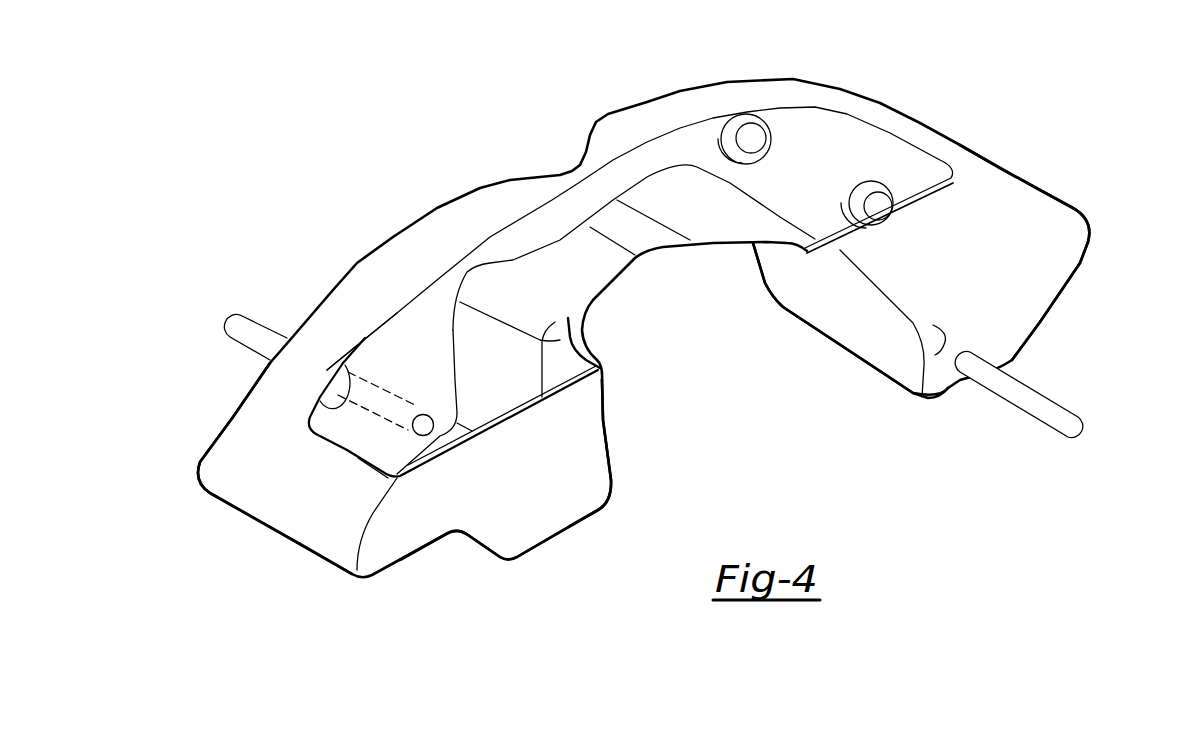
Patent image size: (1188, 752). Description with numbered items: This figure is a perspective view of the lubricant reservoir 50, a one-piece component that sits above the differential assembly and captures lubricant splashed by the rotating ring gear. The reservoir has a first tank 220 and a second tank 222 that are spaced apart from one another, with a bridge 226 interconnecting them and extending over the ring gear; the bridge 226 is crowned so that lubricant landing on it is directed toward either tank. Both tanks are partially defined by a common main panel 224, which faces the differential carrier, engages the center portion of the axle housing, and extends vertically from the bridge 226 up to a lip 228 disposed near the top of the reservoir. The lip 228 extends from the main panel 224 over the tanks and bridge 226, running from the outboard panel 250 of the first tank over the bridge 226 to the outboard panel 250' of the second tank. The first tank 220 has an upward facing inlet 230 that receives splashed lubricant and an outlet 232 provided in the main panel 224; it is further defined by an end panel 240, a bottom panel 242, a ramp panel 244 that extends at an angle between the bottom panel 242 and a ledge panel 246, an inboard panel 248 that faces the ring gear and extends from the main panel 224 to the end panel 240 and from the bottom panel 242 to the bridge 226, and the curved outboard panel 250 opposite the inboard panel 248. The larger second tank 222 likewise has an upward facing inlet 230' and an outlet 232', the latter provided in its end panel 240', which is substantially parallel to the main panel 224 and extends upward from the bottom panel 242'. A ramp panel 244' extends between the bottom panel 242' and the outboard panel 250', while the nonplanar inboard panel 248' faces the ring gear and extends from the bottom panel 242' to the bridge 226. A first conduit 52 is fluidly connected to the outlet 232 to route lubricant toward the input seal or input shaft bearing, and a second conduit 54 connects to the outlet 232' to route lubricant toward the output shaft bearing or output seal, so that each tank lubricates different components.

The lubricant reservoir 50 is at (840, 75).
The first conduit 52 is at (287, 339).
The second conduit 54 is at (1037, 392).
The first tank 220 is at (616, 359).
The second tank 222 is at (792, 256).
The main panel 224 is at (365, 350).
The bridge 226 is at (690, 215).
The lip 228 is at (447, 224).
The upward facing inlet 230 is at (453, 334).
The upward facing inlet 230' is at (845, 154).
The outlet 232 is at (377, 393).
The outlet 232' is at (917, 404).
The end panel 240 is at (586, 536).
The end panel 240' is at (893, 350).
The bottom panel 242 is at (535, 576).
The bottom panel 242' is at (835, 378).
The ramp panel 244 is at (450, 575).
The ramp panel 244' is at (1078, 301).
The ledge panel 246 is at (386, 562).
The inboard panel 248 is at (532, 475).
The inboard panel 248' is at (791, 319).
The outboard panel 250 is at (246, 465).
The outboard panel 250' is at (1024, 170).